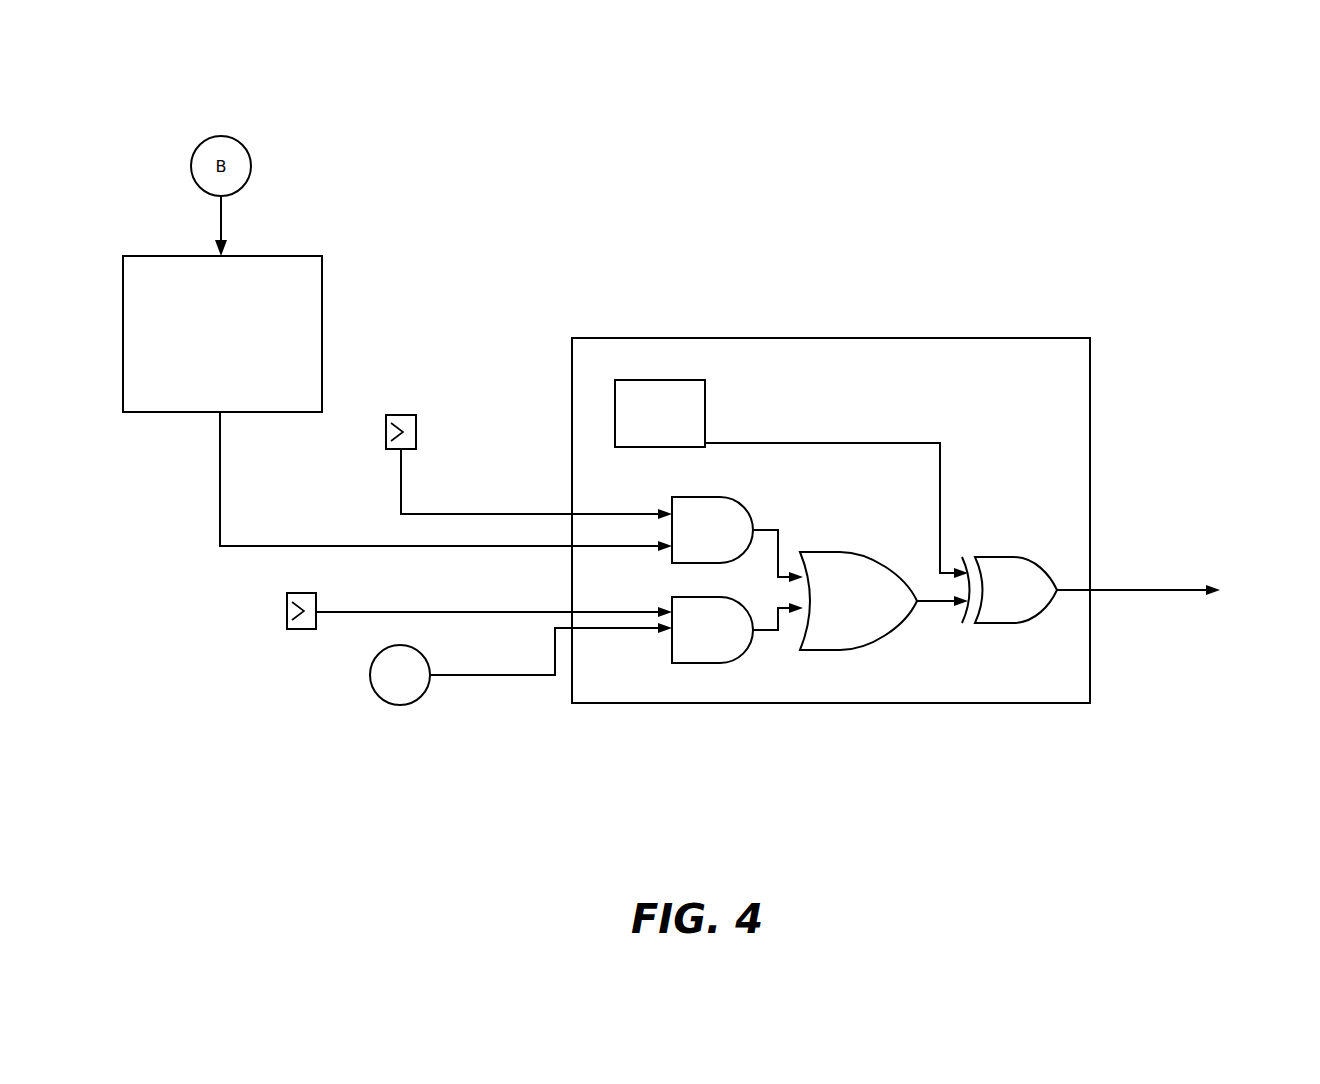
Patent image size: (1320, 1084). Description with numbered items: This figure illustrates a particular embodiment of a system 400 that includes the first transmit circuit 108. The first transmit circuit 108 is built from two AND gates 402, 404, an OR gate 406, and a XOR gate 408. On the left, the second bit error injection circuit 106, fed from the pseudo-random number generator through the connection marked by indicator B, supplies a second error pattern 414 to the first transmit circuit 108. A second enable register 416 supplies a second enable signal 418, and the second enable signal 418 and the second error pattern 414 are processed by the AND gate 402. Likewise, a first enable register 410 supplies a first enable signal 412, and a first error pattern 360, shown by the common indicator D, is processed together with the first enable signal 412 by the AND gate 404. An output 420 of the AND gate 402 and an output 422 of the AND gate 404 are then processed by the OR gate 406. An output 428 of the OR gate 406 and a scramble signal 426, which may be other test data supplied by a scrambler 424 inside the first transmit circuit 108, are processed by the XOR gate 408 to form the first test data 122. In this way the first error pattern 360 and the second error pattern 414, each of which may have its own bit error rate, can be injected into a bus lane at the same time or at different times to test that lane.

The system 400 is at (1222, 84).
The second bit error injection circuit 106 is at (280, 256).
The second error pattern 414 is at (220, 470).
The second enable register 416 is at (412, 404).
The second enable signal 418 is at (488, 514).
The first transmit circuit 108 is at (955, 338).
The scrambler 424 is at (662, 380).
The scramble signal 426 is at (862, 443).
The AND gate 402 is at (754, 507).
The output of the AND gate 402 420 is at (783, 526).
The AND gate 404 is at (672, 655).
The output of the AND gate 404 422 is at (778, 606).
The OR gate 406 is at (840, 553).
The XOR gate 408 is at (995, 557).
The output of the OR gate 428 is at (927, 602).
The first test data 122 is at (1145, 576).
The first enable register 410 is at (250, 608).
The first enable signal 412 is at (518, 610).
The first error pattern 360 is at (470, 675).